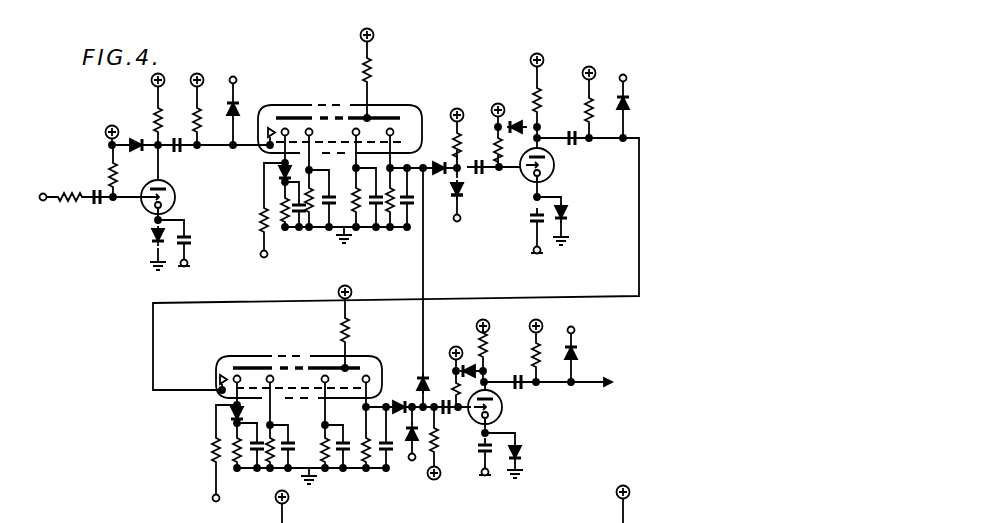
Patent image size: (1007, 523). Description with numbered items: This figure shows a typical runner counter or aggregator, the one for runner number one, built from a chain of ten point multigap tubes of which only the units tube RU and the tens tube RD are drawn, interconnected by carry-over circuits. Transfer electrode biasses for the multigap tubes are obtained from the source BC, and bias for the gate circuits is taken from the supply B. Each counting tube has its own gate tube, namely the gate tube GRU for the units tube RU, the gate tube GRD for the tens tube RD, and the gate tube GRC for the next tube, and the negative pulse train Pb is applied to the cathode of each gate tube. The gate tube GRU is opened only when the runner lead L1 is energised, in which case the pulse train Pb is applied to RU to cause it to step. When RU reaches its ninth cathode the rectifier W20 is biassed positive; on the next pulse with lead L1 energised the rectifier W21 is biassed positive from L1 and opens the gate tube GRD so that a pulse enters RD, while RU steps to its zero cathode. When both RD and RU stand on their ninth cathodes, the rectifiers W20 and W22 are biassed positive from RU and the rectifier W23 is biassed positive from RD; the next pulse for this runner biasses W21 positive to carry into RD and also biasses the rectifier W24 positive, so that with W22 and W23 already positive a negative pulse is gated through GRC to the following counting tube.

The units tube RU is at (352, 154).
The tens tube RD is at (295, 404).
The gate tube for units tube GRU is at (166, 207).
The gate tube for tens tube GRD is at (396, 222).
The gate tube for next counting tube GRC is at (560, 399).
The rectifier W20 is at (440, 157).
The rectifier W21 is at (474, 190).
The rectifier W22 is at (440, 288).
The rectifier W23 is at (397, 398).
The rectifier W24 is at (415, 443).
The bias supply B is at (297, 226).
The transfer electrode bias source BC is at (439, 224).
The runner lead L1 is at (258, 327).
The negative pulse train Pb is at (372, 368).